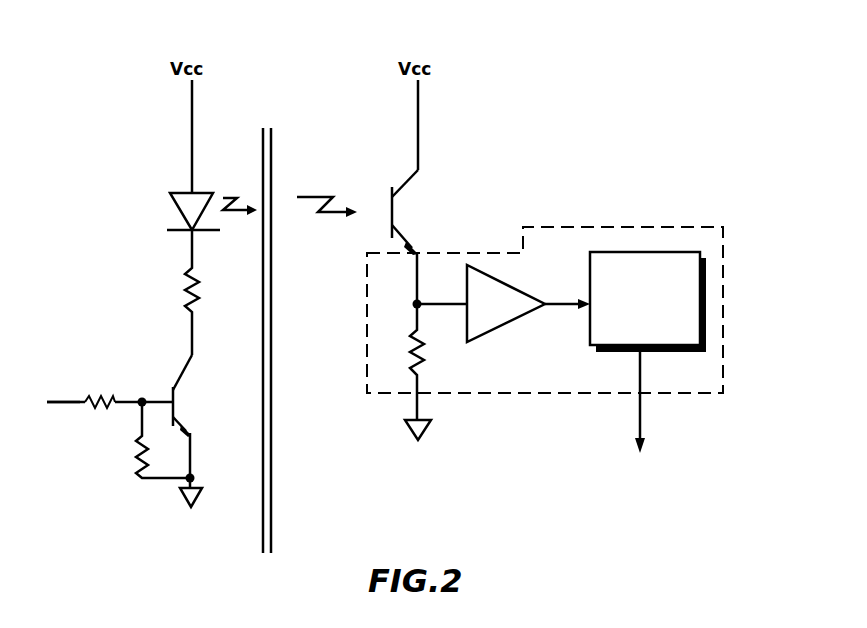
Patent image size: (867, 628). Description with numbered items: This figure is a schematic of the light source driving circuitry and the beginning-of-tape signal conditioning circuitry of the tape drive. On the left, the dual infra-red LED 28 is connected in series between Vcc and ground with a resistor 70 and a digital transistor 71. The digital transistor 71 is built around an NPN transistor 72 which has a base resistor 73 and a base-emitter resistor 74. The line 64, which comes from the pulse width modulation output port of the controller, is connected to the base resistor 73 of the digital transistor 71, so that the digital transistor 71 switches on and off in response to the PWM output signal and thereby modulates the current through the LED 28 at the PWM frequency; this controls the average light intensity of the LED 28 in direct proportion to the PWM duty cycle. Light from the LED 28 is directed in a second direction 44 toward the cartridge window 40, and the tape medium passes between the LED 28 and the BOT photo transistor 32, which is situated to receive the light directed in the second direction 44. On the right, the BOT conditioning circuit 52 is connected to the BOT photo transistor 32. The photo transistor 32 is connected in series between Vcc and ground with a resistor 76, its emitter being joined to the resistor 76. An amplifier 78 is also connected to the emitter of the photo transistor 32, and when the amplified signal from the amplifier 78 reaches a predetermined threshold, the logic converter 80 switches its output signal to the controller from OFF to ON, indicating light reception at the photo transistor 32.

The dual infra-red LED 28 is at (180, 193).
The second direction 44 is at (231, 195).
The window 40 is at (272, 298).
The resistor 70 is at (185, 292).
The NPN transistor 72 is at (192, 384).
The digital transistor 71 is at (100, 364).
The base resistor 73 is at (93, 398).
The line 64 is at (83, 405).
The base-emitter resistor 74 is at (136, 446).
The BOT photo transistor 32 is at (420, 200).
The BOT conditioning circuit 52 is at (657, 226).
The resistor 76 is at (420, 355).
The amplifier 78 is at (498, 328).
The logic converter 80 is at (703, 278).